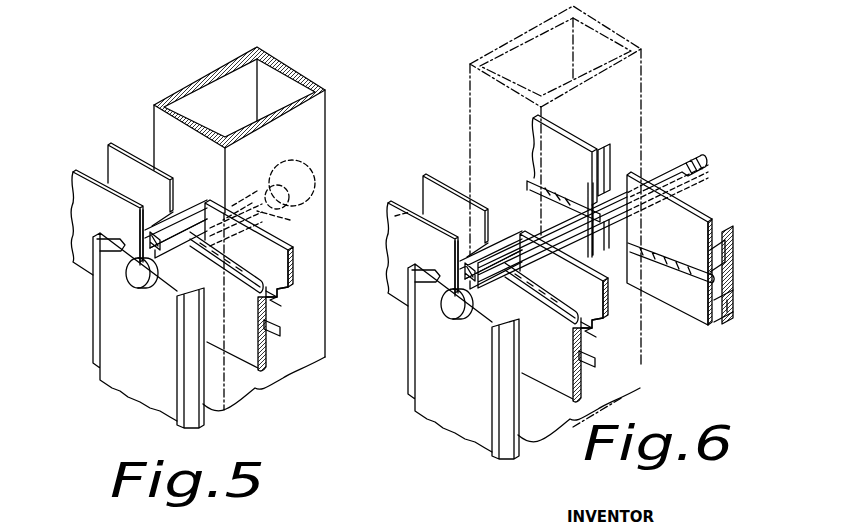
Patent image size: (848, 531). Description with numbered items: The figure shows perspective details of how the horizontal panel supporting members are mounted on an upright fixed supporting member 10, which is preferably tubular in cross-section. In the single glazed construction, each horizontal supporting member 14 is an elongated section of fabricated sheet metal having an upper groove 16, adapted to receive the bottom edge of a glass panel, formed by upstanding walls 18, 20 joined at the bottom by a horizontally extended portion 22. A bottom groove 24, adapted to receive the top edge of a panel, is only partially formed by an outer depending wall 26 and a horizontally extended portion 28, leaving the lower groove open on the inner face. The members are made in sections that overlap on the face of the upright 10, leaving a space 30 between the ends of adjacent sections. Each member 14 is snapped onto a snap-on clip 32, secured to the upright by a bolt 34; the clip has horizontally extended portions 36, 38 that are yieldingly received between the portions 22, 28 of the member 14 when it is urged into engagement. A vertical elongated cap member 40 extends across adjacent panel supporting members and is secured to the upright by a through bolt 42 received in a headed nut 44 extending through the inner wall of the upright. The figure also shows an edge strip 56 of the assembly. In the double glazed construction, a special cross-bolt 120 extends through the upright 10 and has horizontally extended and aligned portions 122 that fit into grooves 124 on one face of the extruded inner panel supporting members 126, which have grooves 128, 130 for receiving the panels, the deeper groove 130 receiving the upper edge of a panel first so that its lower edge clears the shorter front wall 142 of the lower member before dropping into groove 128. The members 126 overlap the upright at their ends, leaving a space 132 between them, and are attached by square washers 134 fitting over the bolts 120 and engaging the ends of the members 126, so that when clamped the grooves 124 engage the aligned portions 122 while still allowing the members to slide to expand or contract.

In FIG. 5, the upright fixed supporting member 10 is at (296, 74).
In FIG. 6, the upright fixed supporting member 10 is at (630, 31).
In FIG. 5, the horizontal supporting member 14 is at (82, 211).
In FIG. 6, the horizontal supporting member 14 is at (392, 254).
In FIG. 5, the upper groove 16 is at (104, 180).
In FIG. 6, the upper groove 16 is at (424, 181).
In FIG. 5, the upstanding wall 18 is at (100, 186).
In FIG. 6, the upstanding wall 18 is at (415, 187).
In FIG. 5, the upstanding wall 20 is at (125, 121).
In FIG. 6, the upstanding wall 20 is at (447, 178).
In FIG. 5, the horizontally extended portion 22 is at (282, 301).
In FIG. 6, the horizontally extended portion 22 is at (652, 338).
In FIG. 5, the bottom groove 24 is at (270, 346).
In FIG. 6, the bottom groove 24 is at (587, 381).
In FIG. 5, the outer depending wall 26 is at (247, 358).
In FIG. 6, the outer depending wall 26 is at (552, 396).
In FIG. 5, the horizontally extended portion 28 is at (282, 328).
In FIG. 6, the horizontally extended portion 28 is at (659, 385).
In FIG. 5, the space 30 is at (184, 206).
In FIG. 6, the space 30 is at (496, 251).
In FIG. 5, the snap-on clip 32 is at (205, 203).
In FIG. 6, the snap-on clip 32 is at (501, 240).
In FIG. 5, the bolt 34 is at (168, 288).
In FIG. 5, the horizontally extended portion 36 is at (141, 238).
In FIG. 6, the horizontally extended portion 36 is at (457, 270).
In FIG. 5, the horizontally extended portion 38 is at (100, 244).
In FIG. 6, the horizontally extended portion 38 is at (494, 336).
In FIG. 5, the vertical elongated cap member 40 is at (113, 350).
In FIG. 6, the vertical elongated cap member 40 is at (437, 402).
In FIG. 5, the through bolt 42 is at (291, 220).
In FIG. 6, the through bolt 42 is at (395, 216).
In FIG. 5, the headed nut 44 is at (313, 160).
In FIG. 6, the headed nut 44 is at (479, 316).
In FIG. 5, the edge bar 56 is at (93, 301).
In FIG. 6, the edge bar 56 is at (408, 283).
In FIG. 6, the cross-bolt 120 is at (672, 166).
In FIG. 6, the aligned portion 122 is at (603, 250).
In FIG. 6, the groove 124 is at (530, 183).
In FIG. 6, the panel supporting member 126 is at (734, 271).
In FIG. 6, the groove 128 is at (716, 261).
In FIG. 6, the groove 130 is at (725, 303).
In FIG. 6, the space 132 is at (615, 192).
In FIG. 6, the square washer 134 is at (630, 181).
In FIG. 6, the shorter front wall 142 is at (716, 231).